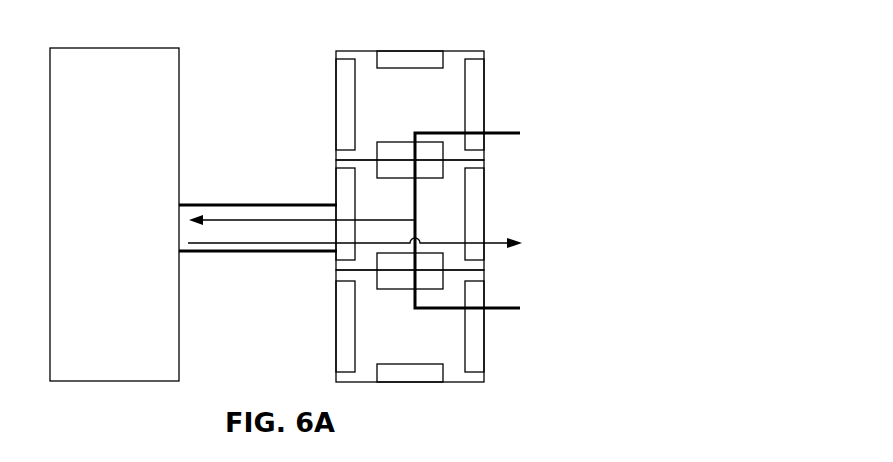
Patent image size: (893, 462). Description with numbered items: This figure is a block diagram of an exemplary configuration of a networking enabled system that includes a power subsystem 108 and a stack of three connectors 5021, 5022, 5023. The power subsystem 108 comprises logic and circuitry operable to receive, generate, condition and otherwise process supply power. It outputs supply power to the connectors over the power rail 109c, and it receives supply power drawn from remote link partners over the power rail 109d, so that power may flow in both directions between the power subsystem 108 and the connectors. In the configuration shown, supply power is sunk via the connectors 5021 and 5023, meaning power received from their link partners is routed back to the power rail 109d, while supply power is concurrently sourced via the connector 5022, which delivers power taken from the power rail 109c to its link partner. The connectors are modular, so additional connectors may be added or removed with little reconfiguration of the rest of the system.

The power subsystem 108 is at (114, 214).
The power rail 109d is at (222, 204).
The power rail 109c is at (226, 254).
The connector 5021 is at (484, 52).
The connector 5022 is at (484, 164).
The connector 5023 is at (484, 274).